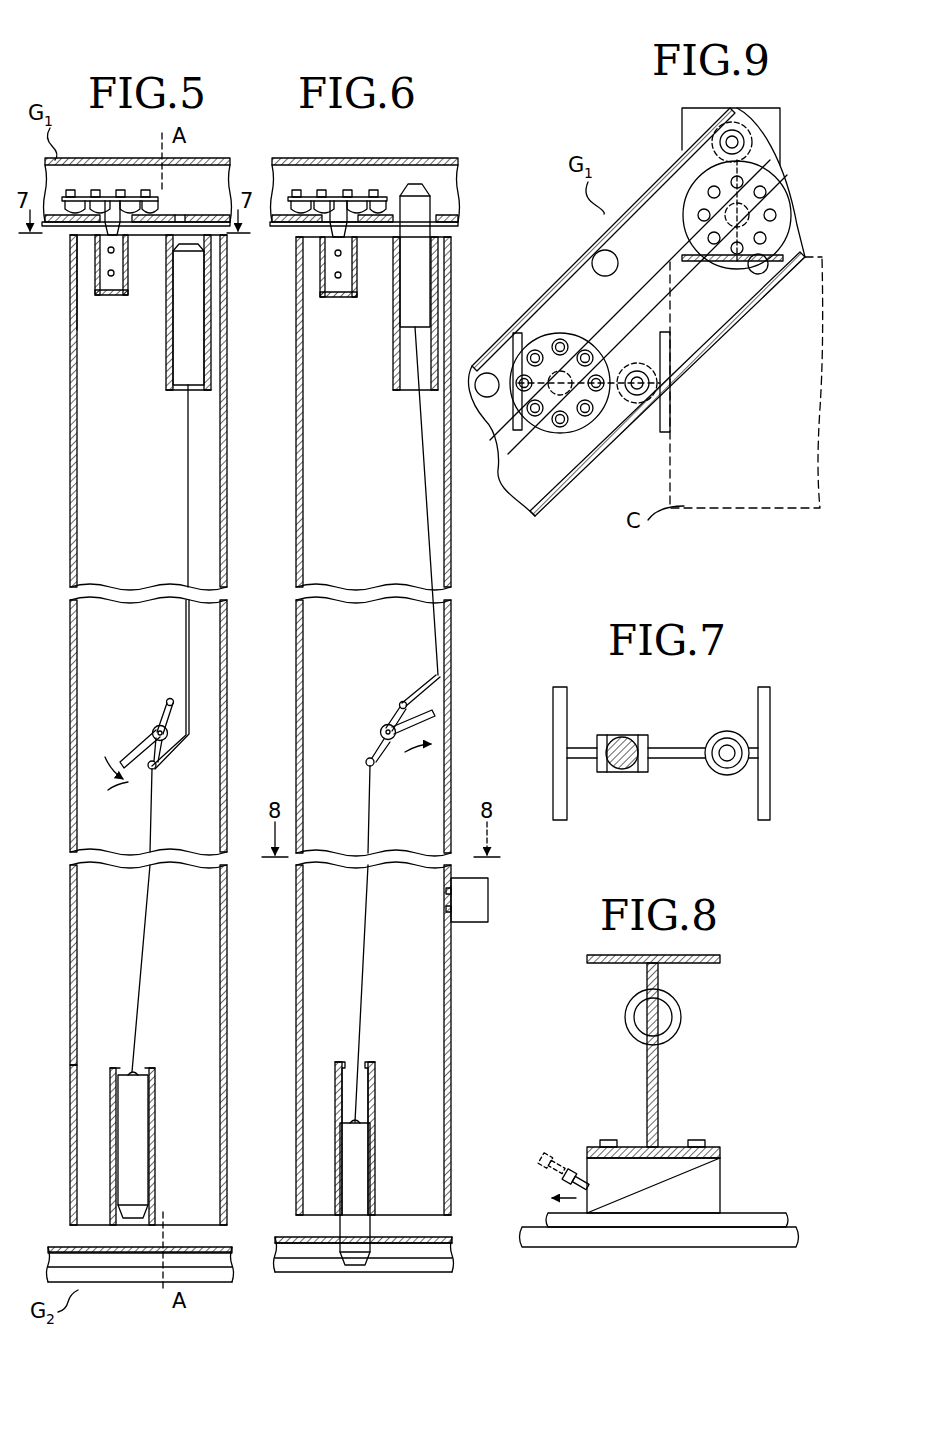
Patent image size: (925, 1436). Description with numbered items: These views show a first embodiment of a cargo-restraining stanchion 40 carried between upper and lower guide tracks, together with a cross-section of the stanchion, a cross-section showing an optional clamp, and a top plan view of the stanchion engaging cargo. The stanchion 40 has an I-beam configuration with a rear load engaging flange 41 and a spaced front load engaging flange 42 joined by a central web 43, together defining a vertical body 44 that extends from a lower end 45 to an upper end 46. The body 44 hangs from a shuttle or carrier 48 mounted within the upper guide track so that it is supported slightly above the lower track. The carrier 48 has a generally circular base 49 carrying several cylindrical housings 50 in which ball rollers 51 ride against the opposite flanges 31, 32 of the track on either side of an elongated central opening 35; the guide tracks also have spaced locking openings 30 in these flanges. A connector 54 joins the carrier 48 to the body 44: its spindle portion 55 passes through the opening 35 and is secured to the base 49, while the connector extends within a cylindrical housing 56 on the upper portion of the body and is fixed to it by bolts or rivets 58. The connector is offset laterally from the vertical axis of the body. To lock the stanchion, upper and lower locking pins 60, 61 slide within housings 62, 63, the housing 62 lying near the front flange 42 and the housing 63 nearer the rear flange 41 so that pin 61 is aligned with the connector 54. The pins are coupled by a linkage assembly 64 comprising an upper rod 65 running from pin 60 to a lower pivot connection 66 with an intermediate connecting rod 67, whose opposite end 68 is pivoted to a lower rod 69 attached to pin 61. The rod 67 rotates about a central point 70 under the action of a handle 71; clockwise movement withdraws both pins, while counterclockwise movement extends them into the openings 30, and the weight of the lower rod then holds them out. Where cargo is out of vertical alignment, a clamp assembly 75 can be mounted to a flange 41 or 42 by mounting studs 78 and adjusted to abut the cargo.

In FIG. 5, the locking openings 30 is at (137, 1258).
In FIG. 6, the locking openings 30 is at (364, 1254).
In FIG. 9, the locking openings 30 is at (597, 256).
In FIG. 9, the flange 31 is at (576, 294).
In FIG. 9, the flange 32 is at (704, 318).
In FIG. 9, the elongated central opening 35 is at (548, 502).
In FIG. 5, the stanchion 40 is at (146, 730).
In FIG. 6, the stanchion 40 is at (393, 726).
In FIG. 7, the stanchion 40 is at (643, 758).
In FIG. 8, the stanchion 40 is at (644, 1056).
In FIG. 5, the rear load engaging flange 41 is at (70, 502).
In FIG. 6, the rear load engaging flange 41 is at (296, 969).
In FIG. 7, the rear load engaging flange 41 is at (554, 712).
In FIG. 8, the rear load engaging flange 41 is at (604, 962).
In FIG. 5, the front load engaging flange 42 is at (225, 474).
In FIG. 6, the front load engaging flange 42 is at (450, 1034).
In FIG. 7, the front load engaging flange 42 is at (766, 718).
In FIG. 8, the front load engaging flange 42 is at (637, 1146).
In FIG. 5, the central web 43 is at (100, 540).
In FIG. 6, the central web 43 is at (316, 548).
In FIG. 7, the central web 43 is at (670, 748).
In FIG. 8, the central web 43 is at (658, 1064).
In FIG. 5, the vertical body 44 is at (72, 936).
In FIG. 5, the lower end 45 is at (70, 1222).
In FIG. 5, the upper end 46 is at (68, 259).
In FIG. 5, the carrier 48 is at (60, 186).
In FIG. 6, the carrier 48 is at (372, 183).
In FIG. 5, the base 49 is at (110, 210).
In FIG. 6, the base 49 is at (337, 213).
In FIG. 5, the cylindrical housings 50 is at (150, 205).
In FIG. 5, the ball rollers 51 is at (62, 226).
In FIG. 5, the connector 54 is at (92, 275).
In FIG. 6, the connector 54 is at (338, 267).
In FIG. 5, the spindle portion 55 is at (112, 249).
In FIG. 5, the cylindrical housing 56 is at (72, 322).
In FIG. 5, the fastening elements 58 is at (118, 295).
In FIG. 5, the upper locking pin 60 is at (189, 305).
In FIG. 6, the upper locking pin 60 is at (424, 265).
In FIG. 7, the upper locking pin 60 is at (725, 746).
In FIG. 5, the lower locking pin 61 is at (136, 1142).
In FIG. 6, the lower locking pin 61 is at (363, 1166).
In FIG. 5, the upper housing 62 is at (205, 352).
In FIG. 6, the upper housing 62 is at (415, 313).
In FIG. 7, the upper housing 62 is at (714, 778).
In FIG. 5, the lower housing 63 is at (112, 1076).
In FIG. 6, the lower housing 63 is at (355, 1138).
In FIG. 8, the lower housing 63 is at (674, 1011).
In FIG. 5, the linkage assembly 64 is at (149, 760).
In FIG. 5, the upper rod 65 is at (188, 564).
In FIG. 6, the upper rod 65 is at (420, 476).
In FIG. 5, the lower pivot connection 66 is at (160, 770).
In FIG. 6, the lower pivot connection 66 is at (378, 752).
In FIG. 5, the intermediate connecting rod 67 is at (166, 704).
In FIG. 6, the intermediate connecting rod 67 is at (400, 702).
In FIG. 5, the opposite end 68 is at (190, 692).
In FIG. 6, the opposite end 68 is at (421, 690).
In FIG. 5, the lower rod 69 is at (148, 952).
In FIG. 6, the lower rod 69 is at (360, 1032).
In FIG. 5, the central point 70 is at (153, 731).
In FIG. 6, the central point 70 is at (392, 741).
In FIG. 5, the handle 71 is at (145, 802).
In FIG. 6, the handle 71 is at (434, 710).
In FIG. 6, the clamp assembly 75 is at (492, 905).
In FIG. 8, the clamp assembly 75 is at (728, 1176).
In FIG. 8, the mounting studs 78 is at (702, 1140).